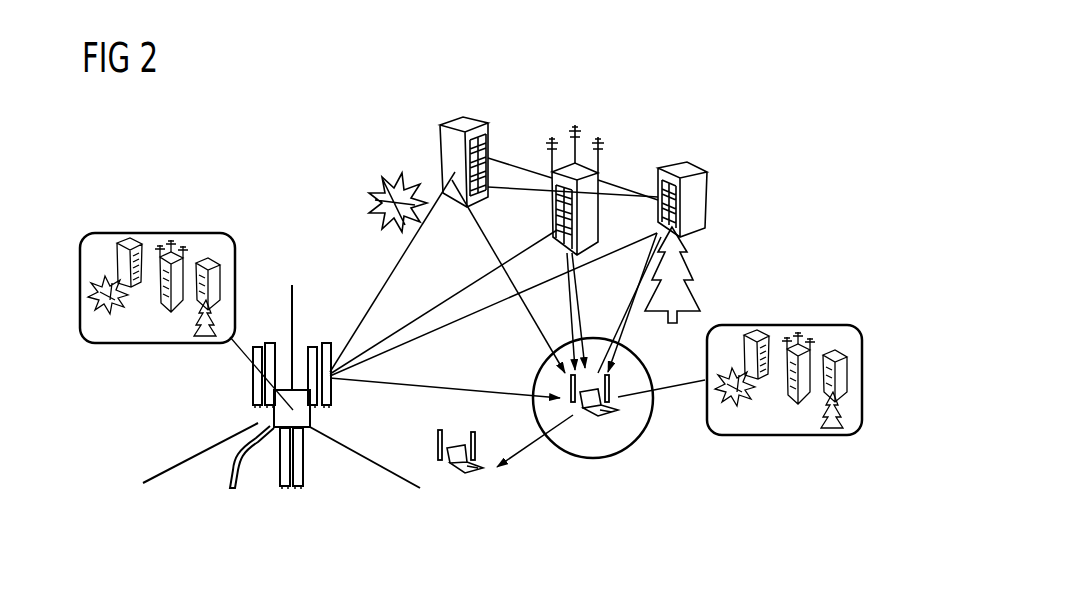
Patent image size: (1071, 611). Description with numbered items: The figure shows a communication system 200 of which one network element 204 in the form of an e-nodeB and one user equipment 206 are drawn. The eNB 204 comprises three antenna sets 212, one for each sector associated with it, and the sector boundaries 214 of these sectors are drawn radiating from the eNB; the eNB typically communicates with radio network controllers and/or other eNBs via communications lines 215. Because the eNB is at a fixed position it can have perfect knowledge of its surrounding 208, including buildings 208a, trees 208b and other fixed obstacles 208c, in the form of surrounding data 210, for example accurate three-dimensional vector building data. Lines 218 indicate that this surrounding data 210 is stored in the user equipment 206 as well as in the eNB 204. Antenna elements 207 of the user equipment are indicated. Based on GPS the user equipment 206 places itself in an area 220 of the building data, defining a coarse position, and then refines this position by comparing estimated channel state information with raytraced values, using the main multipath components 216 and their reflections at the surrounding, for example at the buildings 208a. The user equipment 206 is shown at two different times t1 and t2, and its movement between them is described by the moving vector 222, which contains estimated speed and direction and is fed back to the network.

The communication system 200 is at (798, 106).
The network element 204 is at (311, 430).
The user equipment 206 is at (613, 412).
The antenna elements 207 is at (611, 375).
The surrounding 208 is at (623, 124).
The buildings 208a is at (463, 118).
The trees 208b is at (684, 272).
The fixed obstacles 208c is at (400, 182).
The surrounding data 210 is at (155, 233).
The antenna sets 212 is at (270, 343).
The sector boundaries 214 is at (293, 302).
The communications lines 215 is at (233, 490).
The main multipath components 216 is at (513, 167).
The lines 218 is at (232, 360).
The area 220 is at (593, 459).
The moving vector 222 is at (531, 446).
The first time t1 is at (668, 457).
The second time t2 is at (493, 492).